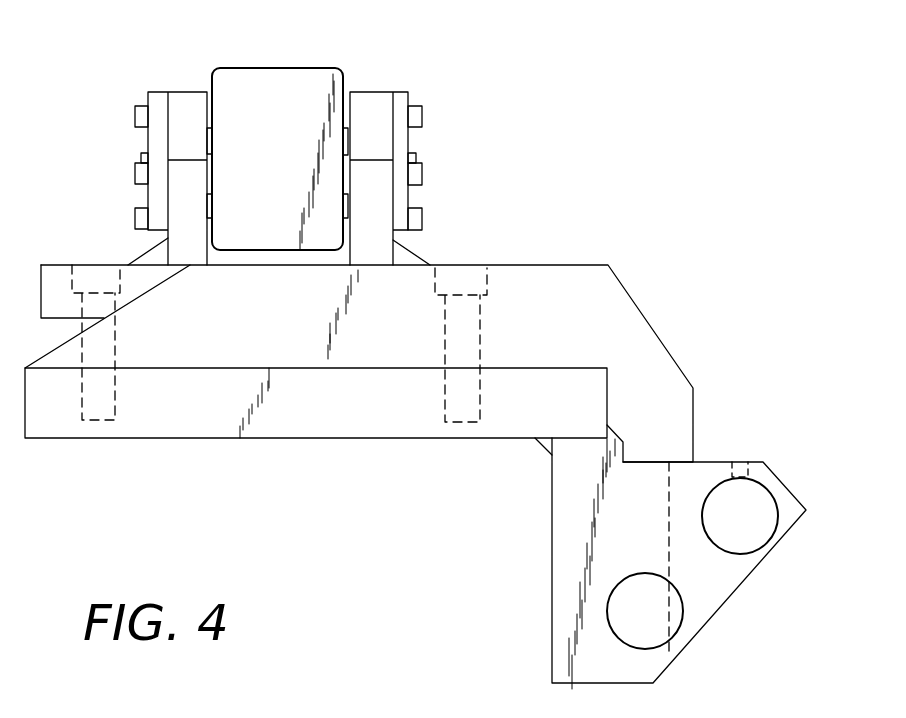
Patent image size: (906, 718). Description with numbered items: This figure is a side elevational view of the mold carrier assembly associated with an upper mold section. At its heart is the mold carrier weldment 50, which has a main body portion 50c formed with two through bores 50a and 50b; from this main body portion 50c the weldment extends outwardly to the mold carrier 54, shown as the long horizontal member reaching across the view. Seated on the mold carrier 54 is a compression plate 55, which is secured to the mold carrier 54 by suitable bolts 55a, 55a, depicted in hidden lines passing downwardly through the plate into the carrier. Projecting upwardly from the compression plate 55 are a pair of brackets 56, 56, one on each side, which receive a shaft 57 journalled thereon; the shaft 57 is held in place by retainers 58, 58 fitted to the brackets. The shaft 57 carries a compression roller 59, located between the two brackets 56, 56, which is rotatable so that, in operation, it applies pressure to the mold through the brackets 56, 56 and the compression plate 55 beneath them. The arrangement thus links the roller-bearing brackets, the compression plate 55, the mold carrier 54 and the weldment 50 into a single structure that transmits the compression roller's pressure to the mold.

The mold carrier weldment 50 is at (626, 558).
The through bore 50a is at (757, 497).
The through bore 50b is at (672, 633).
The main body portion 50c is at (568, 571).
The mold carrier 54 is at (347, 430).
The compression plate 55 is at (558, 295).
The bolts 55a is at (103, 273).
The brackets 56 is at (182, 192).
The shaft 57 is at (345, 152).
The retainers 58 is at (183, 102).
The compression roller 59 is at (295, 96).